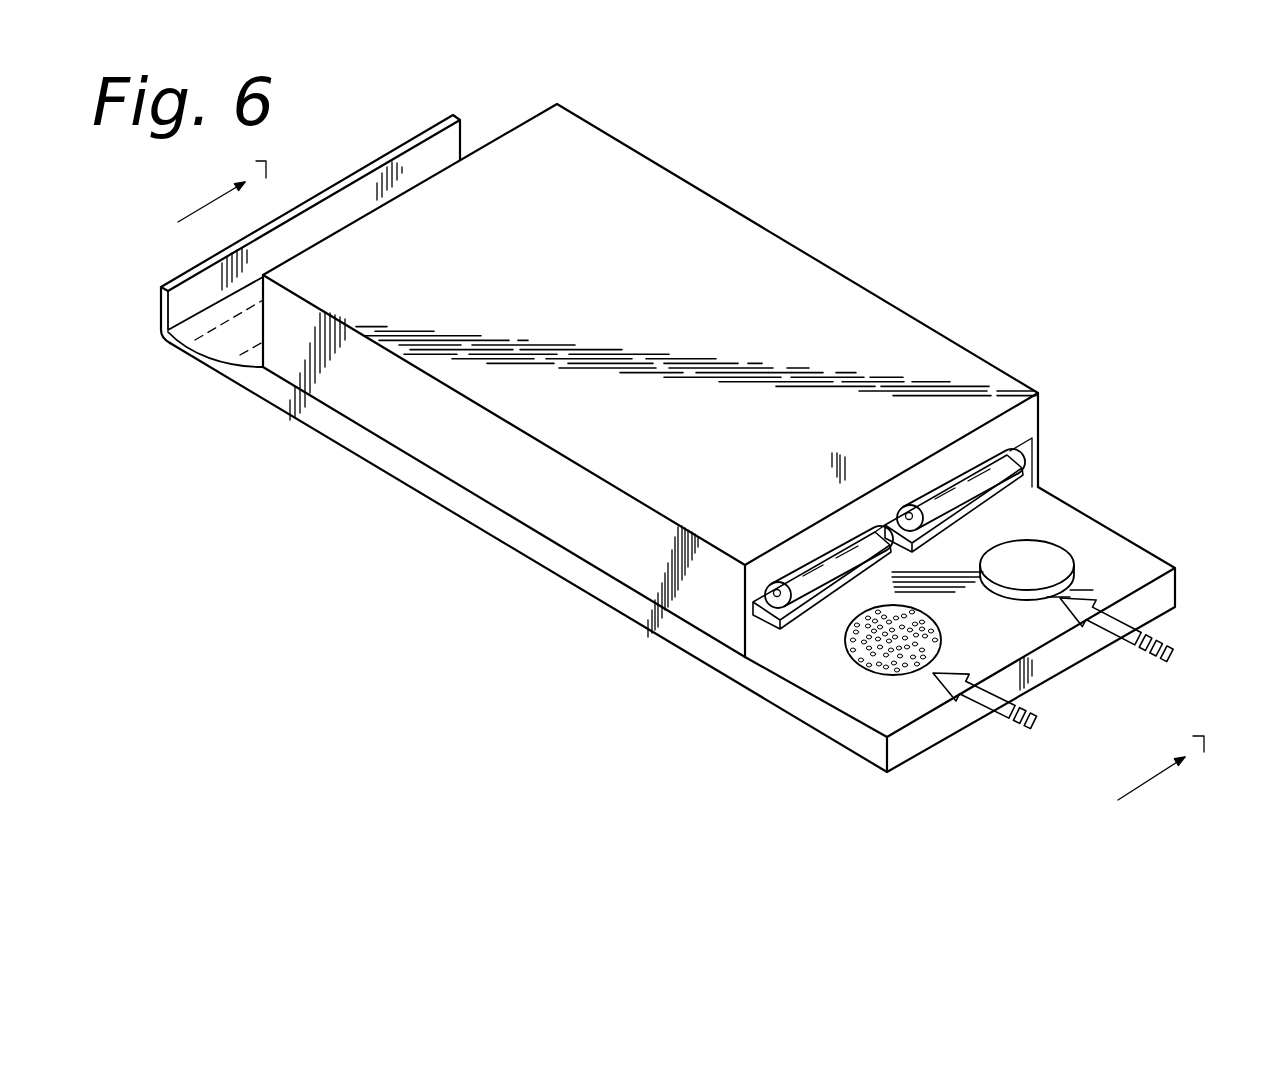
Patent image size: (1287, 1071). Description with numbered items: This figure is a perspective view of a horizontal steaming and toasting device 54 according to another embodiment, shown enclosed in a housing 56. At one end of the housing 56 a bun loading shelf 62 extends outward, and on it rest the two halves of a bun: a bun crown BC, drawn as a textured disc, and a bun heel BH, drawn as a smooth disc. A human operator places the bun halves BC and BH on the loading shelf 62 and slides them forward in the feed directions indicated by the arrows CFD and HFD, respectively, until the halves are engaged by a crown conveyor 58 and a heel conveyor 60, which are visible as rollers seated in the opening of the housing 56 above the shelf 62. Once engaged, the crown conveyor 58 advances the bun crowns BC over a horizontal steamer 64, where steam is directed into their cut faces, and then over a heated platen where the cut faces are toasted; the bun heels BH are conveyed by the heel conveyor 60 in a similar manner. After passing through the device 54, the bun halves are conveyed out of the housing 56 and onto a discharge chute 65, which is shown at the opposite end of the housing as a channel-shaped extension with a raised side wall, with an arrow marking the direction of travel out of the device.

The horizontal steaming and toasting device 54 is at (965, 213).
The housing 56 is at (716, 197).
The crown conveyor 58 is at (823, 570).
The heel conveyor 60 is at (930, 510).
The bun loading shelf 62 is at (1142, 558).
The horizontal steamer 64 is at (1020, 484).
The discharge chute 65 is at (223, 348).
The bun heel BH is at (1060, 567).
The bun crown BC is at (870, 655).
The crown feed direction arrow CFD is at (970, 703).
The heel feed direction arrow HFD is at (1168, 612).